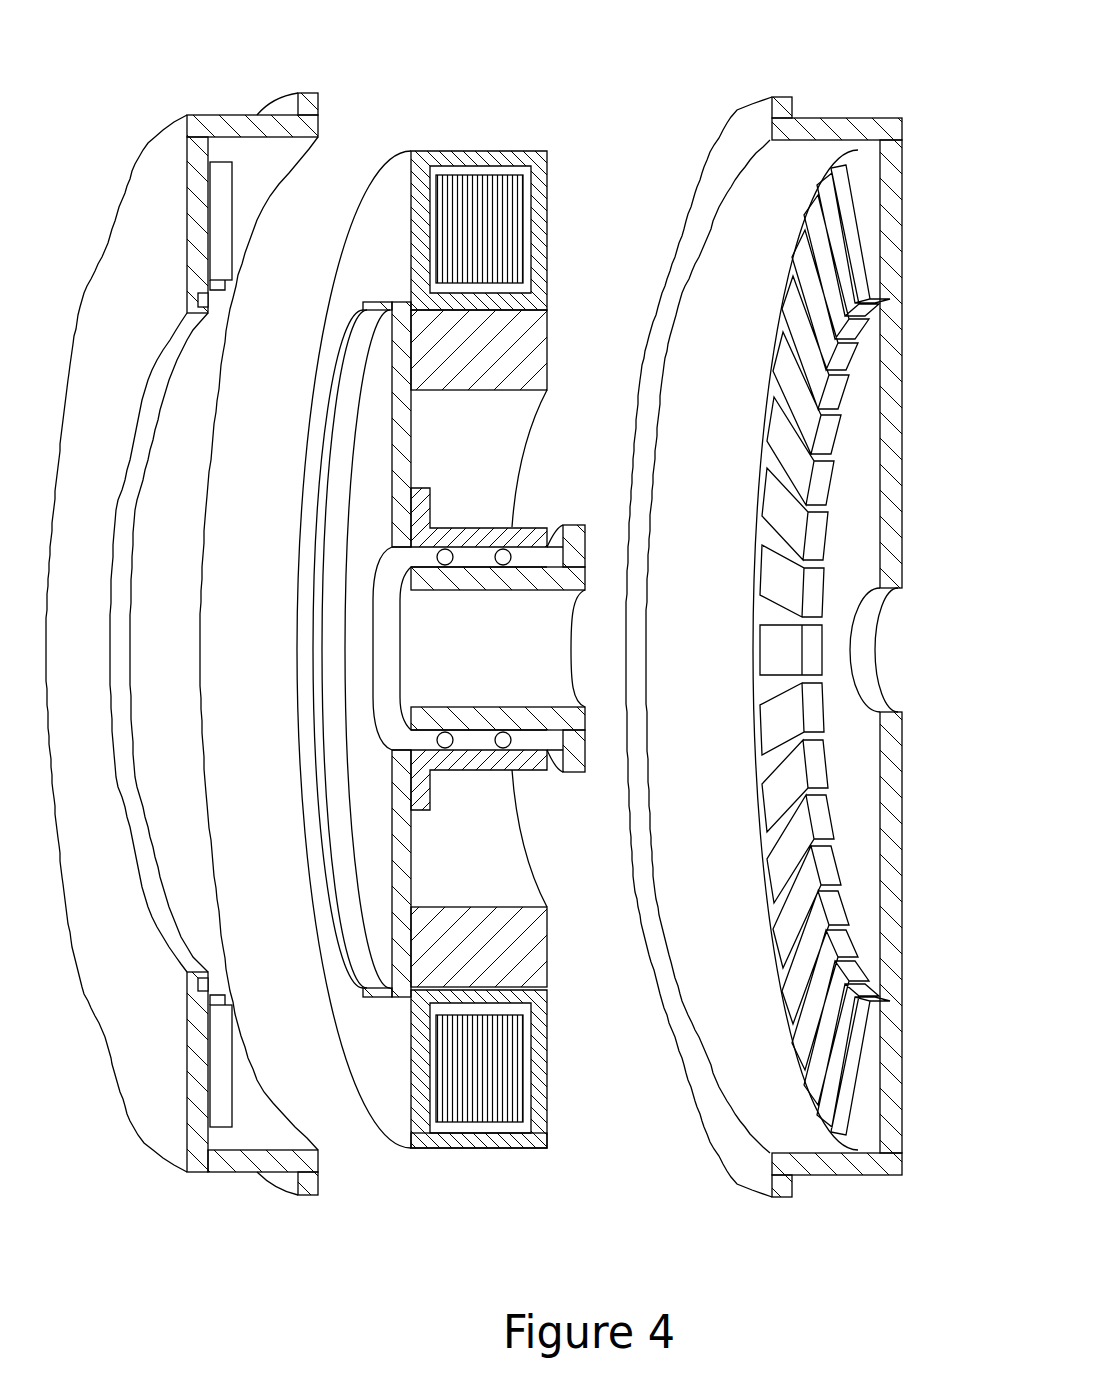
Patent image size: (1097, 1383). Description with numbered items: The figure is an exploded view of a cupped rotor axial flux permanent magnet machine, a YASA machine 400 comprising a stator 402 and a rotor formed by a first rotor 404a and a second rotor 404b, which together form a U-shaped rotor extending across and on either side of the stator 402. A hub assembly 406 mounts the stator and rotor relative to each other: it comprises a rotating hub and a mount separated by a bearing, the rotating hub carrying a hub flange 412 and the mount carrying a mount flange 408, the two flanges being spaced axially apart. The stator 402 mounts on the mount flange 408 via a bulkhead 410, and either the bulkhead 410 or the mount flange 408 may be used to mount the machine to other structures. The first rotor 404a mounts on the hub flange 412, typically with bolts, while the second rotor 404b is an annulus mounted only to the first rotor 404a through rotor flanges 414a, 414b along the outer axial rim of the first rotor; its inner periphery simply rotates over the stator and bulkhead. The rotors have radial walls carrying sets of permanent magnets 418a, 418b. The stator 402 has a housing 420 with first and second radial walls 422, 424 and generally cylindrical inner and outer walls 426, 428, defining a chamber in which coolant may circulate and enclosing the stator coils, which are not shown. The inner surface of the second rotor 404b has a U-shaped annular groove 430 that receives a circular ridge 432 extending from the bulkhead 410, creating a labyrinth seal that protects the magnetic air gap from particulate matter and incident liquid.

The YASA machine 400 is at (388, 103).
The stator 402 is at (446, 1161).
The first rotor 404a is at (815, 128).
The second rotor 404b is at (197, 1163).
The hub assembly 406 is at (475, 645).
The mount flange 408 is at (420, 495).
The bulkhead 410 is at (375, 800).
The hub flange 412 is at (575, 545).
The rotor flange 414a is at (757, 125).
The rotor flange 414b is at (282, 98).
The permanent magnets 418a is at (805, 295).
The permanent magnets 418b is at (215, 1090).
The housing 420 is at (517, 153).
The first radial wall 422 is at (535, 1055).
The second radial wall 424 is at (392, 240).
The inner wall 426 is at (475, 355).
The outer wall 428 is at (475, 1135).
The annular groove 430 is at (210, 298).
The circular ridge 432 is at (365, 980).